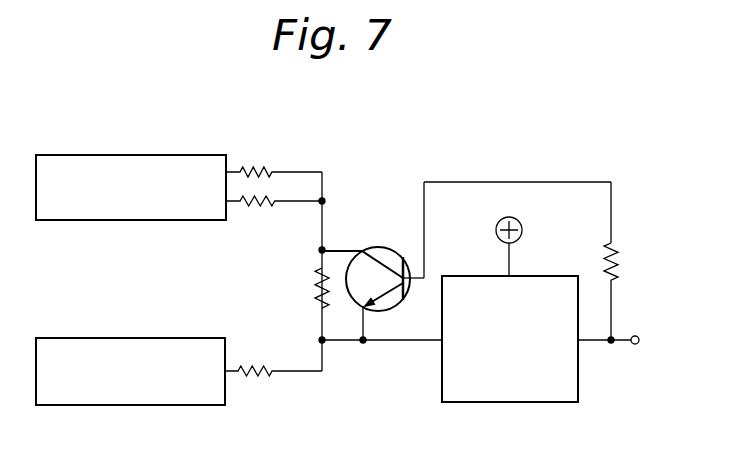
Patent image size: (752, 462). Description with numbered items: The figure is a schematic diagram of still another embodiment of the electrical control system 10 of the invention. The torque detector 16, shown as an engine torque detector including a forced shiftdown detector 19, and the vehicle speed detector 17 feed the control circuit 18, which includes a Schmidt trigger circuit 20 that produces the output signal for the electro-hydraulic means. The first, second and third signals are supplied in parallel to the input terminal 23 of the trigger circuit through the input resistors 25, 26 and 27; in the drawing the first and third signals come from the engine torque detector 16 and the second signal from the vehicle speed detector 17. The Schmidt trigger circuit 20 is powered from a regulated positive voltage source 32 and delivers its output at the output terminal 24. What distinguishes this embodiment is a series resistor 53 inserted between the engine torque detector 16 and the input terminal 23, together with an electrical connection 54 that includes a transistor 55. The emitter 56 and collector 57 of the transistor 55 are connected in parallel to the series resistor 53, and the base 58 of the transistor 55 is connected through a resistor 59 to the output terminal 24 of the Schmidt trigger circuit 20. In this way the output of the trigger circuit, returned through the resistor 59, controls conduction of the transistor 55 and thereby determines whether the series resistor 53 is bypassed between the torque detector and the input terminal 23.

The torque detector 16 is at (131, 166).
The forced shiftdown detector 19 is at (103, 155).
The input resistor 27 is at (268, 178).
The input resistor 25 is at (247, 207).
The series resistor 53 is at (315, 293).
The vehicle speed detector 17 is at (84, 338).
The input resistor 26 is at (253, 364).
The input terminal 23 is at (324, 345).
The transistor 55 is at (379, 282).
The collector 57 is at (378, 249).
The emitter 56 is at (385, 297).
The base 58 is at (405, 282).
The electrical connection 54 is at (432, 182).
The control system 10 is at (507, 163).
The control circuit 18 is at (612, 178).
The resistor 59 is at (638, 265).
The regulated positive voltage source 32 is at (522, 227).
The Schmidt trigger circuit 20 is at (562, 276).
The output terminal 24 is at (636, 346).